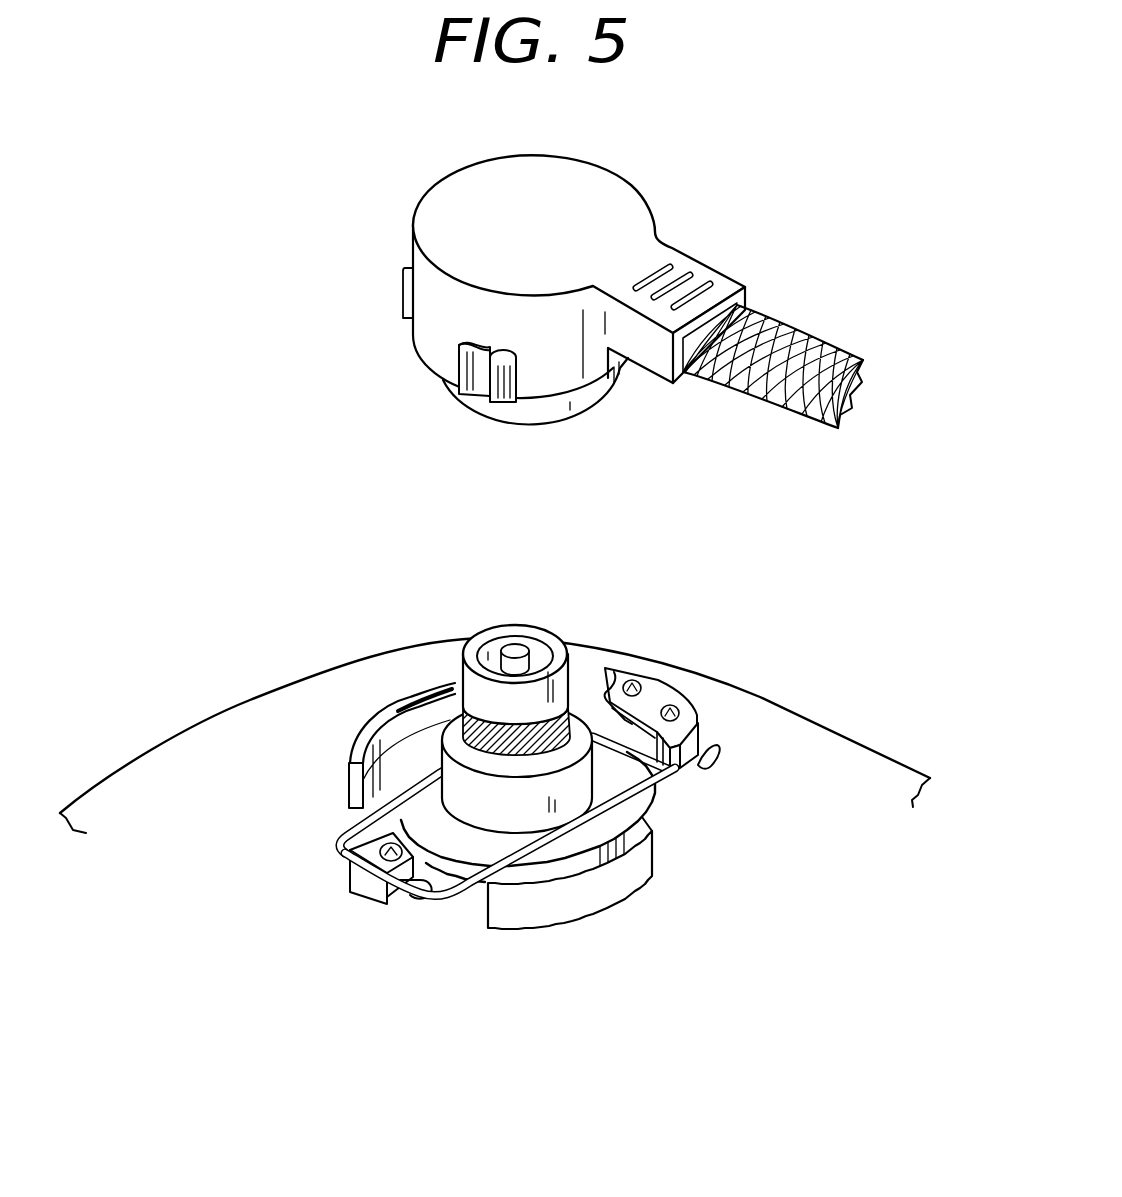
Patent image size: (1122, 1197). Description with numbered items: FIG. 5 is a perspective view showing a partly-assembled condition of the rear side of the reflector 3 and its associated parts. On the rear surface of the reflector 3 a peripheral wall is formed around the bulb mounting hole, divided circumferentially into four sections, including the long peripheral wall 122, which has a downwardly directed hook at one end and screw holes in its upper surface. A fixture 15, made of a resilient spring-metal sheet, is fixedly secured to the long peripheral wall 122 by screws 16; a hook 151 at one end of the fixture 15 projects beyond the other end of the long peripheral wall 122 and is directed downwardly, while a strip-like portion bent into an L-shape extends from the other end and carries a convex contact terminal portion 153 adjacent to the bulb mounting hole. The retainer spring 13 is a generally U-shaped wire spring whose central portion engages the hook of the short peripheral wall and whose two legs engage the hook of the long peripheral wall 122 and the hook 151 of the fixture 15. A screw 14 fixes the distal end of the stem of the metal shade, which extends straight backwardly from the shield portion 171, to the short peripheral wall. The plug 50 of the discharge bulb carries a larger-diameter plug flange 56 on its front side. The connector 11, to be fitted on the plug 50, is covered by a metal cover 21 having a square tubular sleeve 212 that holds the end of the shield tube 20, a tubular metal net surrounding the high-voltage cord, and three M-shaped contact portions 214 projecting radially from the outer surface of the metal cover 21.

The metal cover 21 is at (610, 188).
The sleeve 212 is at (710, 277).
The shield tube 20 is at (793, 347).
The contact portions 214 is at (463, 388).
The connector 11 is at (562, 412).
The plug 50 is at (515, 628).
The contact terminal portion 153 is at (612, 695).
The screws 16 is at (640, 684).
The fixture 15 is at (685, 698).
The reflector 3 is at (767, 723).
The plug flange 56 is at (417, 772).
The screw 14 is at (372, 866).
The shield portion 171 is at (425, 875).
The retainer spring 13 is at (517, 847).
The long peripheral wall 122 is at (640, 762).
The hook 151 is at (705, 768).